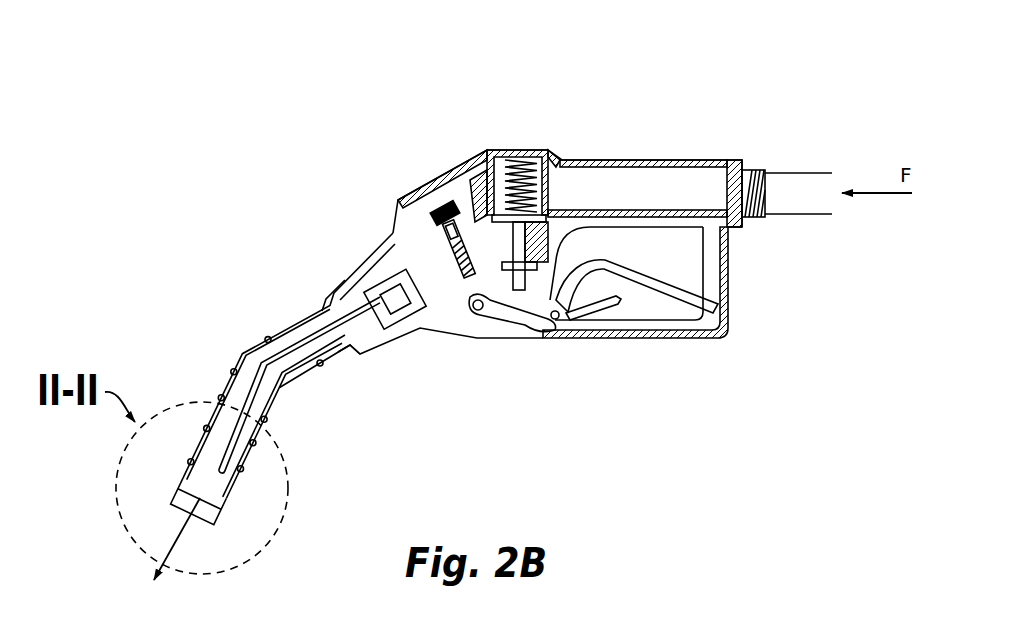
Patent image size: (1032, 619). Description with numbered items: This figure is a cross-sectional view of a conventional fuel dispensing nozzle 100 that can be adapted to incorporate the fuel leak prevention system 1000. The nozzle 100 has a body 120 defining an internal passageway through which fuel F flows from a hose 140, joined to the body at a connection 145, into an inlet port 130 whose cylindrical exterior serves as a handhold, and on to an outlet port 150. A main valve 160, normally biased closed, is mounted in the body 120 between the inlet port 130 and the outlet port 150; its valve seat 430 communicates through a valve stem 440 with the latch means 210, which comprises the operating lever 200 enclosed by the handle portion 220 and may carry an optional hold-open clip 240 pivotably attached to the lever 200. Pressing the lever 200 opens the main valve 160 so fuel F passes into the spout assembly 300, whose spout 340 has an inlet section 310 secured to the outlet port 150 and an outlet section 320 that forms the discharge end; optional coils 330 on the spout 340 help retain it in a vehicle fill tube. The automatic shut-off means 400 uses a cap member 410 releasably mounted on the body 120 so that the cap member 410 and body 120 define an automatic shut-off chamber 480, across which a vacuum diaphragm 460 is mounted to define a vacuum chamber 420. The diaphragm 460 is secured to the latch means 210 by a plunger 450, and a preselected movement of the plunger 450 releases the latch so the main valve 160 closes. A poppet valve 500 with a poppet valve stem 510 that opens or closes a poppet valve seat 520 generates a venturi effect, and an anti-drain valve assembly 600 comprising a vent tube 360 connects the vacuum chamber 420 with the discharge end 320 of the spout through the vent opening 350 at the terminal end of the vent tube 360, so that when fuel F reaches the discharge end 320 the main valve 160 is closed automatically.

The nozzle 100 is at (319, 91).
The body 120 is at (380, 182).
The inlet port 130 is at (638, 180).
The hose 140 is at (782, 160).
The connection 145 is at (753, 160).
The outlet port 150 is at (336, 284).
The main valve 160 is at (528, 146).
The operating lever 200 is at (673, 279).
The latch means 210 is at (733, 349).
The handle portion 220 is at (732, 309).
The hold-open clip 240 is at (626, 306).
The spout assembly 300 is at (211, 374).
The inlet section 310 is at (344, 363).
The outlet section 320 is at (167, 498).
The coils 330 is at (278, 419).
The spout 340 is at (285, 328).
The vent opening 350 is at (241, 481).
The vent tube 360 is at (244, 429).
The automatic shut-off means 400 is at (314, 172).
The cap member 410 is at (410, 193).
The vacuum chamber 420 is at (388, 268).
The valve seat 430 is at (543, 207).
The valve stem 440 is at (468, 188).
The plunger 450 is at (463, 281).
The vacuum diaphragm 460 is at (450, 197).
The automatic shut-off chamber 480 is at (511, 243).
The poppet valve 500 is at (430, 348).
The poppet valve stem 510 is at (390, 291).
The poppet valve seat 520 is at (420, 271).
The anti-drain valve assembly 600 is at (186, 412).
The fuel leak prevention system 1000 is at (246, 524).